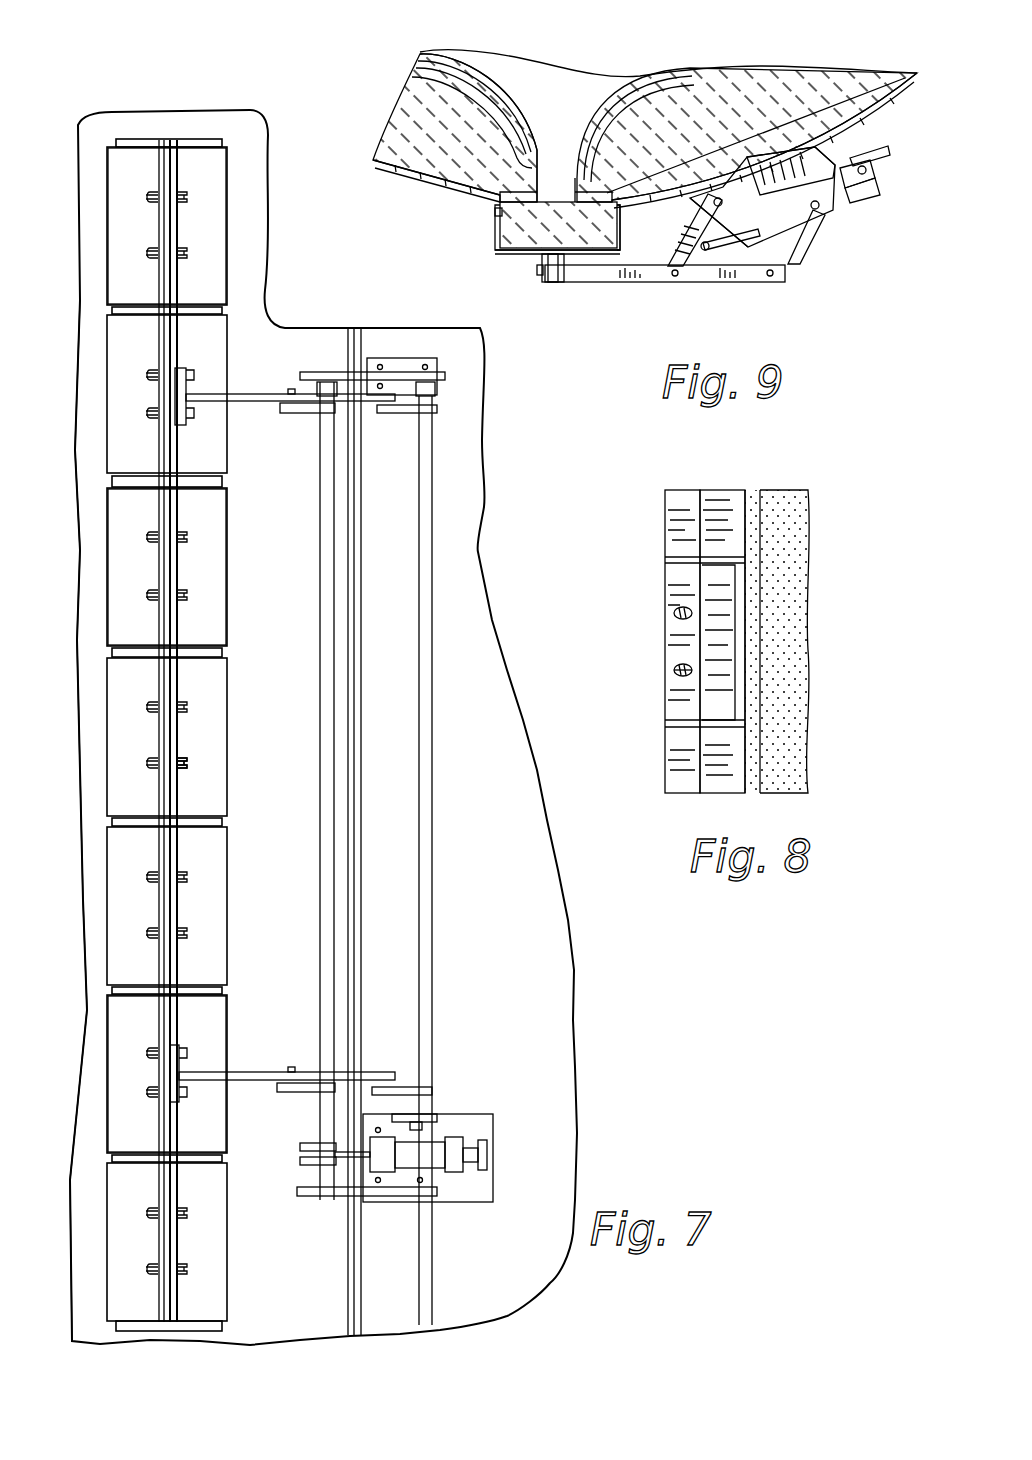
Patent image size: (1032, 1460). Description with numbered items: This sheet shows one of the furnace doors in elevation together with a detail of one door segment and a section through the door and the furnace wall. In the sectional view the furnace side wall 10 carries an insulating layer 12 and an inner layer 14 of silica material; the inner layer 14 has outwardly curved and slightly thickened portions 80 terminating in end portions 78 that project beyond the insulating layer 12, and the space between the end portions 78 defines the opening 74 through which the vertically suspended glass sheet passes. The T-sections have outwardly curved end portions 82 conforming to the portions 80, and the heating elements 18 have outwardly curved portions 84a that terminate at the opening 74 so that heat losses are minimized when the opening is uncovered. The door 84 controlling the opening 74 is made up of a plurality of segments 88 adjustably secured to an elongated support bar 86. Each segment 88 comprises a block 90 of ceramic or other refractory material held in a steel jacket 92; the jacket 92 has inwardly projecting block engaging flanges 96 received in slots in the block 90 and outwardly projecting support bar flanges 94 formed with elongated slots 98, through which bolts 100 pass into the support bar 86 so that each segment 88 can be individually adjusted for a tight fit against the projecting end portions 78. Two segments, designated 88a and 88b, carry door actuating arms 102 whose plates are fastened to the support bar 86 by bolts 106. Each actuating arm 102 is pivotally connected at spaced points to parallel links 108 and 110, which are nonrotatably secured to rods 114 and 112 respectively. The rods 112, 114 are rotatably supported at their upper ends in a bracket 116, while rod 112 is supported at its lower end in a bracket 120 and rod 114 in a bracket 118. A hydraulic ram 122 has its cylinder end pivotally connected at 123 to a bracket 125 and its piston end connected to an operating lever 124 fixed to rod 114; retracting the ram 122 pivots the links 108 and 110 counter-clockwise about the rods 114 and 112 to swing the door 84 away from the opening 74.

In FIG. 7, the side wall 10 is at (553, 985).
In FIG. 9, the side wall 10 is at (405, 170).
In FIG. 9, the insulating layer 12 is at (400, 122).
In FIG. 9, the inner layer of silica material 14 is at (414, 90).
In FIG. 9, the heating elements 18 is at (503, 108).
In FIG. 9, the opening 74 is at (560, 190).
In FIG. 9, the end portions 78 is at (502, 194).
In FIG. 9, the outwardly curved and slightly thickened portions 80 is at (640, 122).
In FIG. 9, the outwardly curved end portions 82 is at (586, 130).
In FIG. 7, the door 84 is at (235, 617).
In FIG. 9, the outwardly curved portions 84a is at (528, 152).
In FIG. 7, the support bar 86 is at (170, 291).
In FIG. 9, the support bar 86 is at (548, 244).
In FIG. 8, the support bar 86 is at (668, 558).
In FIG. 7, the segments 88 is at (228, 210).
In FIG. 8, the segments 88 is at (738, 632).
In FIG. 7, the segment 88a is at (233, 338).
In FIG. 9, the segment 88a is at (494, 240).
In FIG. 7, the segment 88b is at (224, 1028).
In FIG. 9, the block 90 is at (616, 240).
In FIG. 8, the block 90 is at (748, 662).
In FIG. 7, the jackets 92 is at (120, 922).
In FIG. 9, the jackets 92 is at (528, 255).
In FIG. 7, the support bar flanges 94 is at (180, 742).
In FIG. 8, the support bar flanges 94 is at (676, 602).
In FIG. 9, the block engaging flanges 96 is at (496, 222).
In FIG. 8, the elongated slots 98 is at (675, 668).
In FIG. 7, the bolts 100 is at (186, 767).
In FIG. 8, the bolts 100 is at (690, 675).
In FIG. 7, the door actuating arms 102 is at (268, 393).
In FIG. 9, the door actuating arms 102 is at (600, 282).
In FIG. 9, the bolts 106 is at (547, 276).
In FIG. 7, the link 108 is at (305, 404).
In FIG. 9, the link 108 is at (692, 265).
In FIG. 7, the link 110 is at (385, 413).
In FIG. 9, the link 110 is at (795, 265).
In FIG. 7, the rod 112 is at (433, 862).
In FIG. 9, the rod 112 is at (818, 208).
In FIG. 7, the rod 114 is at (320, 880).
In FIG. 9, the rod 114 is at (718, 200).
In FIG. 7, the bracket 116 is at (342, 372).
In FIG. 9, the bracket 116 is at (800, 228).
In FIG. 7, the bracket 118 is at (300, 1197).
In FIG. 7, the bracket 120 is at (435, 1114).
In FIG. 7, the hydraulic ram 122 is at (425, 1153).
In FIG. 9, the hydraulic ram 122 is at (838, 192).
In FIG. 9, the pivotal connection 123 is at (858, 188).
In FIG. 7, the operating lever 124 is at (302, 1162).
In FIG. 9, the operating lever 124 is at (720, 262).
In FIG. 9, the bracket 125 is at (878, 166).